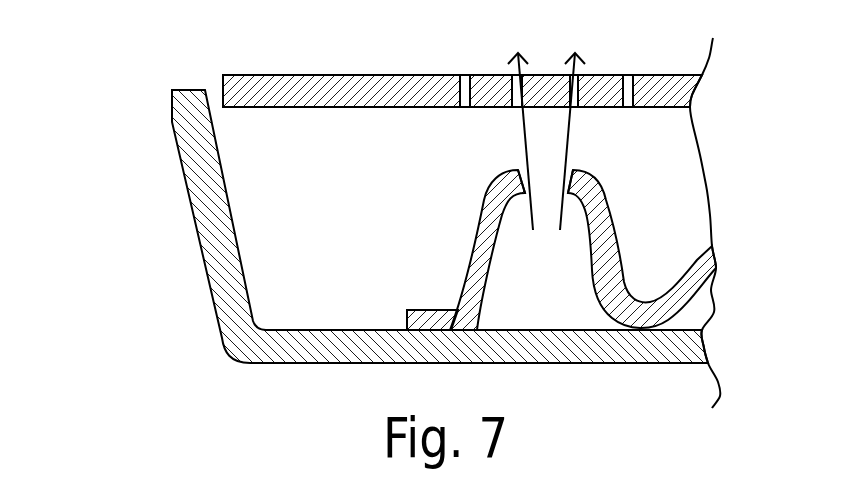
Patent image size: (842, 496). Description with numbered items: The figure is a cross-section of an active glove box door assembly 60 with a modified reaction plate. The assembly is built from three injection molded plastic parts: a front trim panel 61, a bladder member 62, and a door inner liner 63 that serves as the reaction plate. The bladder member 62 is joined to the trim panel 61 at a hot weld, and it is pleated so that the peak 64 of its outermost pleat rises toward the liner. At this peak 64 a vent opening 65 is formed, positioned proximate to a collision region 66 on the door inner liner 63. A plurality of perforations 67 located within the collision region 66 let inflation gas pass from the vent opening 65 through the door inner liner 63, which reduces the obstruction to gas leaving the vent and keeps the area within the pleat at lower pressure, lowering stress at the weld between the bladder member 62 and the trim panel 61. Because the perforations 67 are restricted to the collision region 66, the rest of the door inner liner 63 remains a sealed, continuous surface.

The active glove box door assembly 60 is at (133, 193).
The front trim panel 61 is at (278, 370).
The bladder member 62 is at (606, 233).
The door inner liner/reaction plate 63 is at (462, 78).
The peak of outermost pleat 64 is at (582, 170).
The vent opening 65 is at (519, 172).
The collision region 66 is at (495, 108).
The perforations 67 is at (516, 88).